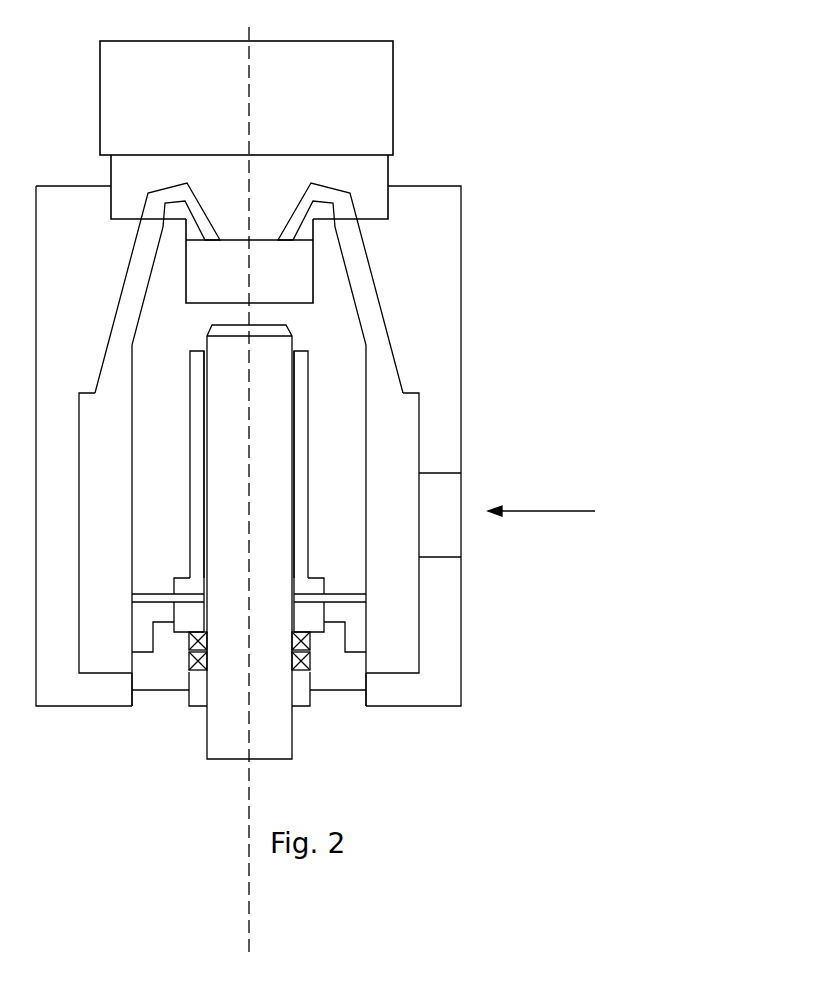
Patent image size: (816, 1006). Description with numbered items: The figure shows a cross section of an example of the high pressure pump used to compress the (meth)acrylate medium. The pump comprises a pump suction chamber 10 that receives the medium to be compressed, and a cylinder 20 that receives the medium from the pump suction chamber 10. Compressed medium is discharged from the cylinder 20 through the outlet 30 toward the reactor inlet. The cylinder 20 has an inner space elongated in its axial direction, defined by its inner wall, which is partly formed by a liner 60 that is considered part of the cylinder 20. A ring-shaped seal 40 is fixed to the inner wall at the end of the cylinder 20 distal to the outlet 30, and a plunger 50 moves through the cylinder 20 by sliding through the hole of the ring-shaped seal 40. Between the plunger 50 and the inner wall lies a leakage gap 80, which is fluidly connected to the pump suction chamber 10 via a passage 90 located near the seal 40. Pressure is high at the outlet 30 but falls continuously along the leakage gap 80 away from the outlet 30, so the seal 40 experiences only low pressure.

The pump suction chamber 10 is at (397, 655).
The cylinder 20 is at (337, 359).
The outlet 30 is at (504, 102).
The ring-shaped seal 40 is at (310, 663).
The plunger 50 is at (263, 381).
The liner 60 is at (298, 563).
The leakage gap 80 is at (295, 442).
The passage 90 is at (348, 599).